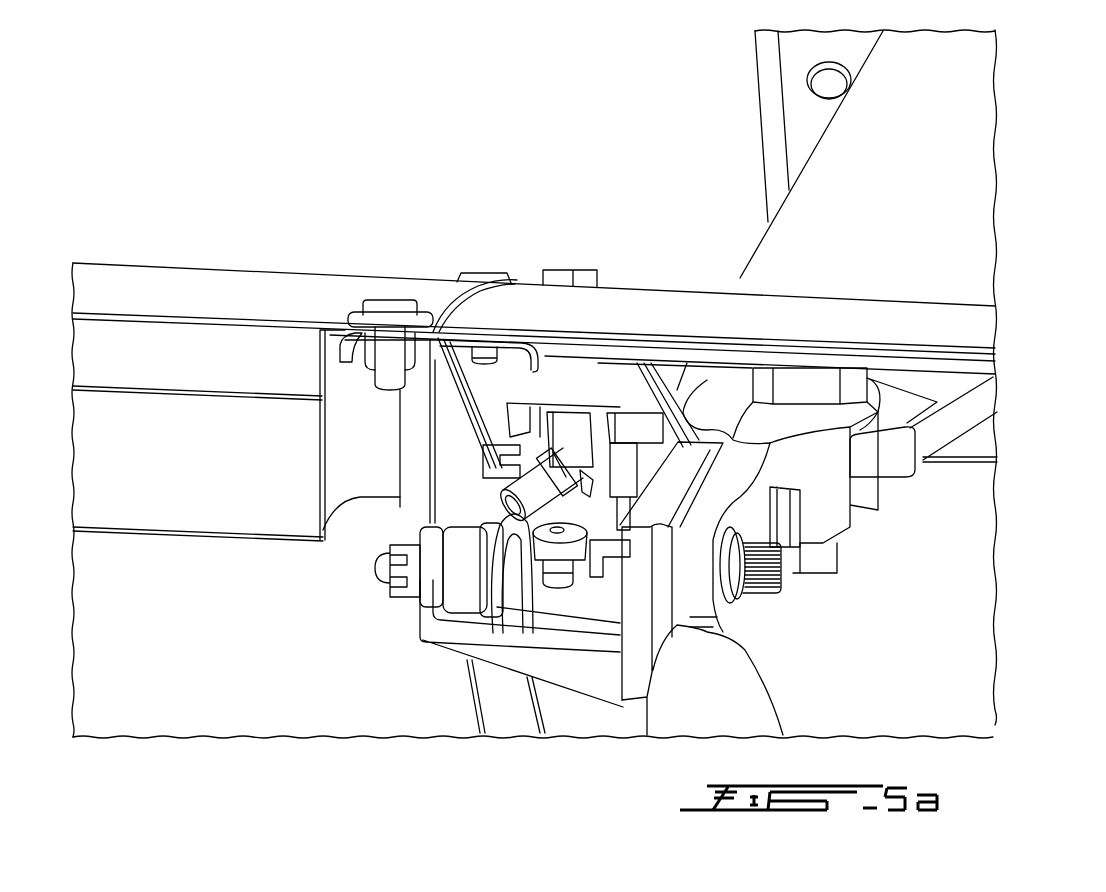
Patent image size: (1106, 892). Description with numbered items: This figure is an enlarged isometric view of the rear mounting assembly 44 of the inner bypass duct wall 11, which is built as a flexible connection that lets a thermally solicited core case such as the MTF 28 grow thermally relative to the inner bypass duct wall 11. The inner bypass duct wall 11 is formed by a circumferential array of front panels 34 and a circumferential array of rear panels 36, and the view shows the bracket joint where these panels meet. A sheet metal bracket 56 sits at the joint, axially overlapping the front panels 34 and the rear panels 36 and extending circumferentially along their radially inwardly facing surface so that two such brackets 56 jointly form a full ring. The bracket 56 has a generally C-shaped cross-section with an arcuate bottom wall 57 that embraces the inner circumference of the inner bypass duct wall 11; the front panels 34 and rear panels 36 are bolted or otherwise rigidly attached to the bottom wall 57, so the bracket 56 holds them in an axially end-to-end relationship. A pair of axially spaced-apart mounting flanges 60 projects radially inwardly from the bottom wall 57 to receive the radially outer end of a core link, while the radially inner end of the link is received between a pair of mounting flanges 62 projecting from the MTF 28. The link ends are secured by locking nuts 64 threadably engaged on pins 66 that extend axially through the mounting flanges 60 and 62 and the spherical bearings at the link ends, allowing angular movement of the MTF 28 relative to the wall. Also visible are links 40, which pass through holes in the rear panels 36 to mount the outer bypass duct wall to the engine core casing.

The inner bypass duct wall 11 is at (193, 255).
The front panels 34 is at (270, 290).
The links 40 is at (953, 213).
The rear mounting assembly 44 is at (553, 166).
The rear panels 36 is at (652, 308).
The brackets 56 is at (671, 373).
The mounting flanges 60 is at (600, 445).
The bottom wall 57 is at (427, 358).
The locking nuts 64 is at (375, 570).
The mounting flanges 62 is at (490, 590).
The pins 66 is at (512, 590).
The MTF 28 is at (570, 662).